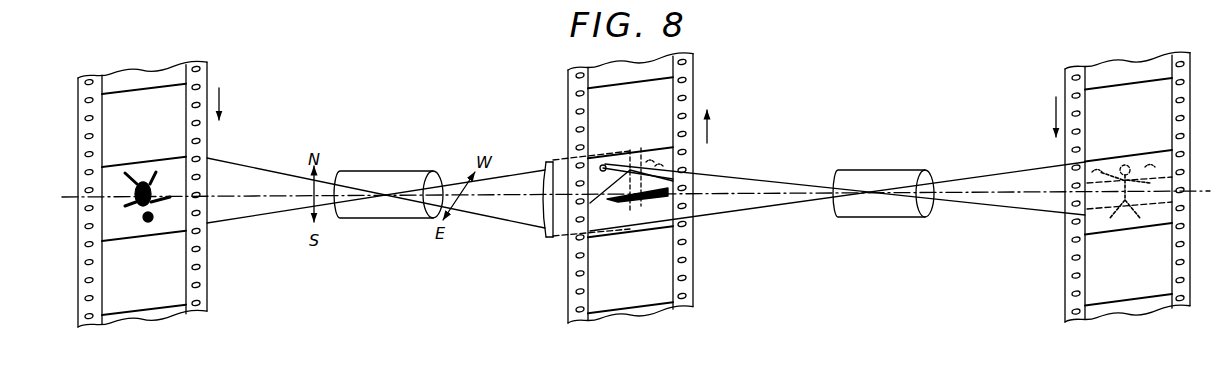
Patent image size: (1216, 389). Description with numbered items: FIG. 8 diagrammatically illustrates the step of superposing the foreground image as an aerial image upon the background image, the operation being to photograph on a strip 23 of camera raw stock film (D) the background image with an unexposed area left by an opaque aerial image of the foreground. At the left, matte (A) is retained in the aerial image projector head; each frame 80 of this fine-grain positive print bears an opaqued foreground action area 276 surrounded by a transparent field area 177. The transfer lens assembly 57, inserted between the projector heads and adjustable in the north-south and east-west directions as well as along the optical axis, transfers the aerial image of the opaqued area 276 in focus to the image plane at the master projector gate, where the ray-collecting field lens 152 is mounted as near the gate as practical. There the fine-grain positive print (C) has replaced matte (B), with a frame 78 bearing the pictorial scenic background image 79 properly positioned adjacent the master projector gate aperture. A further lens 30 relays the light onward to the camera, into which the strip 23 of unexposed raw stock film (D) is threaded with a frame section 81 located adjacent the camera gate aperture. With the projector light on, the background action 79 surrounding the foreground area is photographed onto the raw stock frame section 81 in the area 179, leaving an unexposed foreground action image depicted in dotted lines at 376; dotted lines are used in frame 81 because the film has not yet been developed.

The frame of matte (A) 80 is at (173, 155).
The transparent field area 177 is at (178, 177).
The opaqued area 276 is at (172, 198).
The transfer lens assembly 57 is at (385, 168).
The field lens 152 is at (545, 162).
The pictorial scenic image 79 is at (602, 168).
The frame of fine-grain positive print (C) 78 is at (658, 148).
The relay lens 30 is at (882, 168).
The frame section 81 is at (1097, 158).
The background image area 179 is at (1100, 178).
The unexposed foreground action image 376 is at (1108, 200).
The strip of raw stock camera film 23 is at (1062, 270).
The matte A is at (208, 313).
The fine-grain positive print C is at (693, 308).
The raw stock camera film D is at (1068, 320).